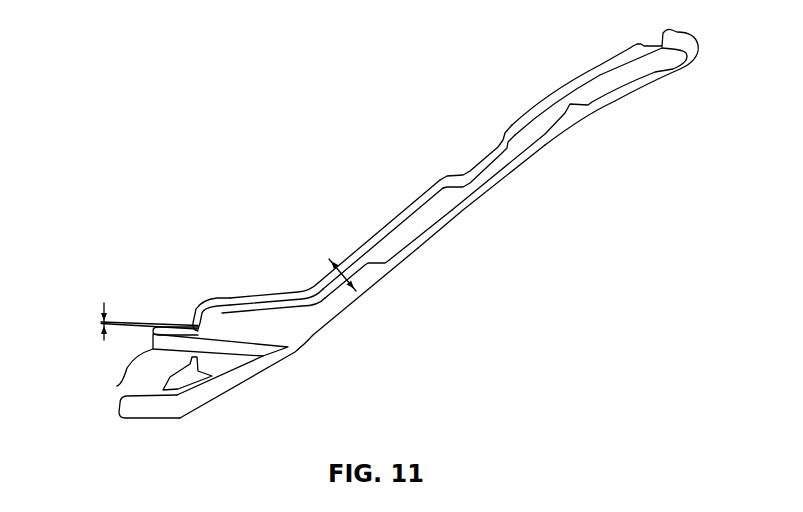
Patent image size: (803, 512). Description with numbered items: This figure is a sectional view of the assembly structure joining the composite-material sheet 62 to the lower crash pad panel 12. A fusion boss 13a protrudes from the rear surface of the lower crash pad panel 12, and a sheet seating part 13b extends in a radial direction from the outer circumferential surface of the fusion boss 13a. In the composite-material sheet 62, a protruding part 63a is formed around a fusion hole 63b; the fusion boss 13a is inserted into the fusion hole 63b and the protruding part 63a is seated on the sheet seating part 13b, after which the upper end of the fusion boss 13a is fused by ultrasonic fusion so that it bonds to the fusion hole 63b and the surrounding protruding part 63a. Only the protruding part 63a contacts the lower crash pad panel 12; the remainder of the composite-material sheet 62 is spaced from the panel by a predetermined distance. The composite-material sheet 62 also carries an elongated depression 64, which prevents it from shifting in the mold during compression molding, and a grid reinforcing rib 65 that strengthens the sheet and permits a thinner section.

The lower crash pad panel 12 is at (347, 316).
The fusion boss 13a is at (117, 386).
The sheet seating part 13b is at (223, 299).
The composite-material sheet 62 is at (360, 248).
The protruding part 63a is at (258, 293).
The fusion hole 63b is at (170, 327).
The elongated depression 64 is at (480, 162).
The grid reinforcing rib 65 is at (546, 97).